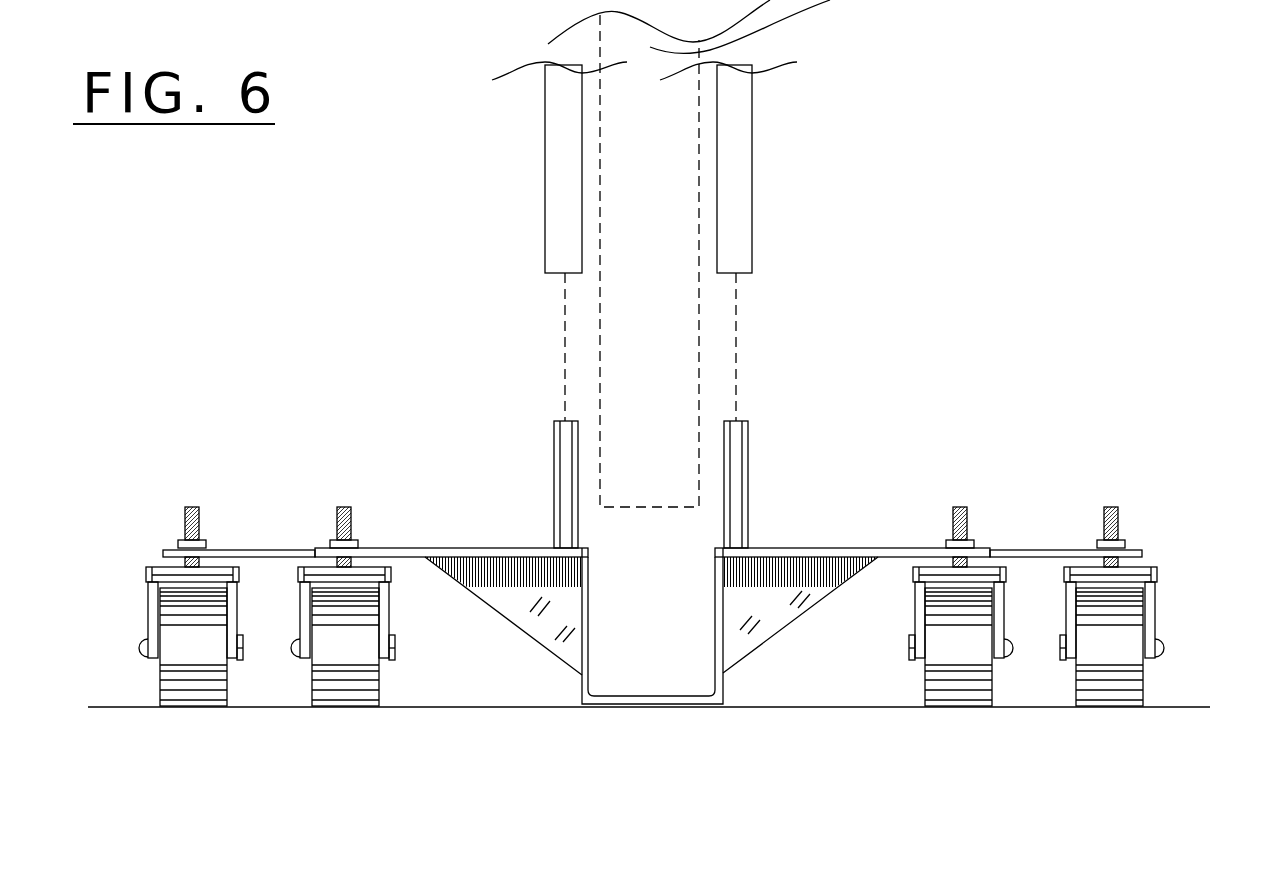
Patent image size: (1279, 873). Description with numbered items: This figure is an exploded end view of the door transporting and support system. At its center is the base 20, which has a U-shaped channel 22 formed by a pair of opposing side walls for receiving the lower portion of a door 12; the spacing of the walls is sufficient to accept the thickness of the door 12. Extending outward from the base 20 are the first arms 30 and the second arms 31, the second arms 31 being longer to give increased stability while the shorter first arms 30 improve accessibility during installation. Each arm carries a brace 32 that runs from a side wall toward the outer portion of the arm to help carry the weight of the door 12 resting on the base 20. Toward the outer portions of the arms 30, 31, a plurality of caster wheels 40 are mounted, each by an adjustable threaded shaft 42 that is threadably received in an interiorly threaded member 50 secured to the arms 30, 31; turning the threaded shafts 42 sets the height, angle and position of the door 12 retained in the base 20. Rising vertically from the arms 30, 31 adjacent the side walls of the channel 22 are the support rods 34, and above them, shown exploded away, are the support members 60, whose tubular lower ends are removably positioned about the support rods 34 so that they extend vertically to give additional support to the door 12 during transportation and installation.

The door 12 is at (838, 0).
The support members 60 is at (563, 173).
The support rods 34 is at (565, 452).
The first arms 30 is at (505, 552).
The second arms 31 is at (255, 550).
The brace 32 is at (545, 643).
The base 20 is at (725, 692).
The channel 22 is at (715, 640).
The caster wheels 40 is at (172, 643).
The threaded shaft 42 is at (186, 509).
The threaded members 50 is at (179, 543).